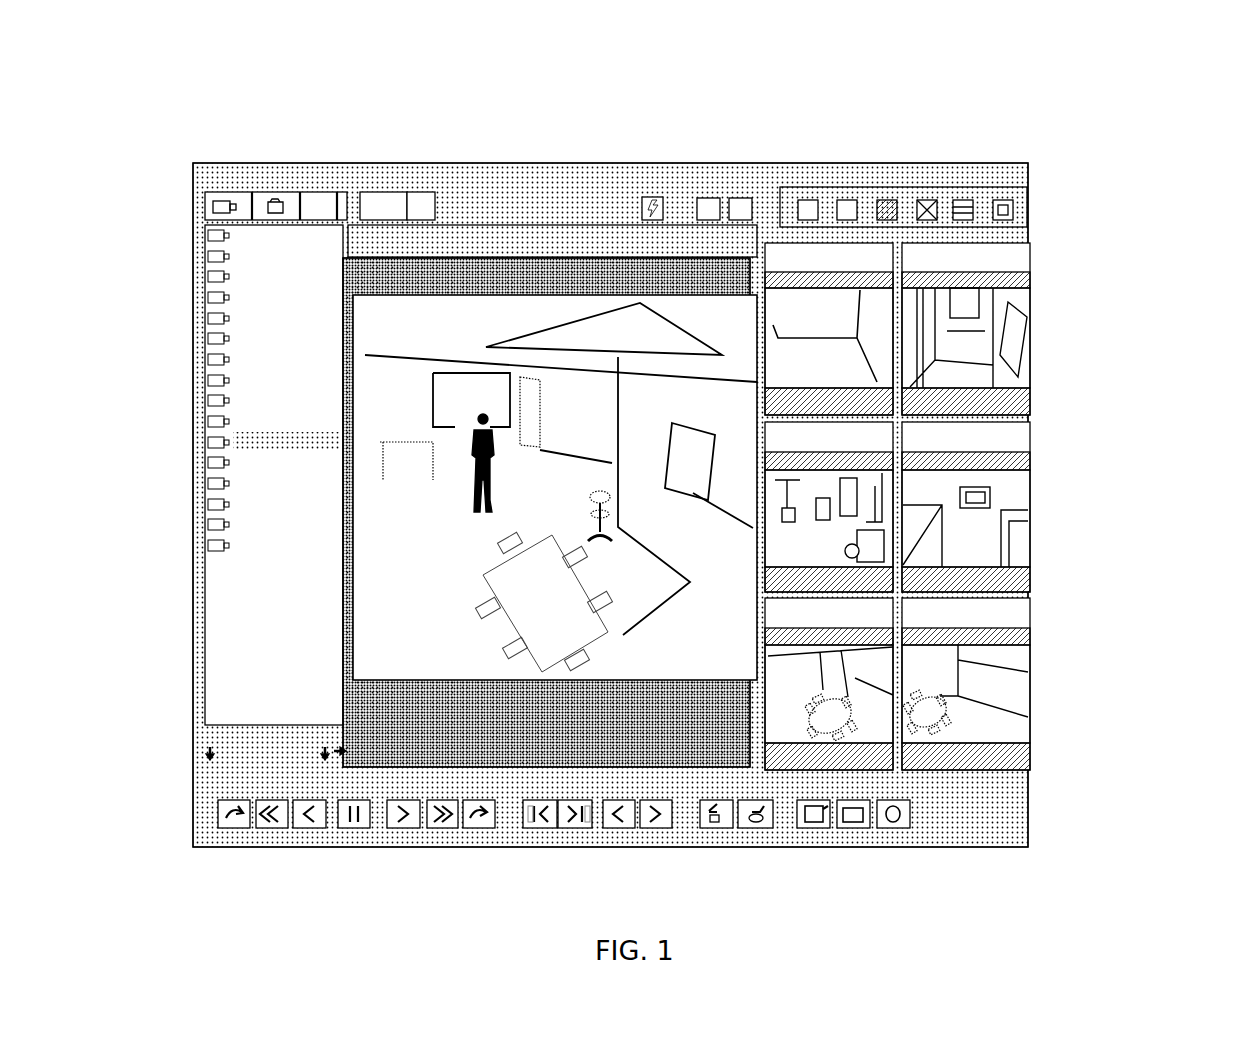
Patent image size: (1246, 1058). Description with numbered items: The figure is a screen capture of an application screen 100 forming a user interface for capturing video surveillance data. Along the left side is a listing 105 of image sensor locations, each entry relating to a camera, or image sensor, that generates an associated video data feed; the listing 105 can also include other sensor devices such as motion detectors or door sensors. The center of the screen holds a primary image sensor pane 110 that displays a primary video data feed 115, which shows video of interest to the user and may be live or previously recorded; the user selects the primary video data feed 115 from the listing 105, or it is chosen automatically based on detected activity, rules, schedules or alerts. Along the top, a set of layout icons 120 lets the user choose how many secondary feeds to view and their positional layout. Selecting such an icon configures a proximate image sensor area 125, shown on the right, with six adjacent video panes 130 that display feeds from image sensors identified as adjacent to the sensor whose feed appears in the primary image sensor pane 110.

The application screen 100 is at (1172, 70).
The listing of image sensor locations 105 is at (178, 548).
The primary image sensor pane 110 is at (415, 740).
The primary video data feed 115 is at (645, 688).
The layout icons 120 is at (925, 185).
The proximate image sensor area 125 is at (1050, 750).
The adjacent video panes 130 is at (963, 302).